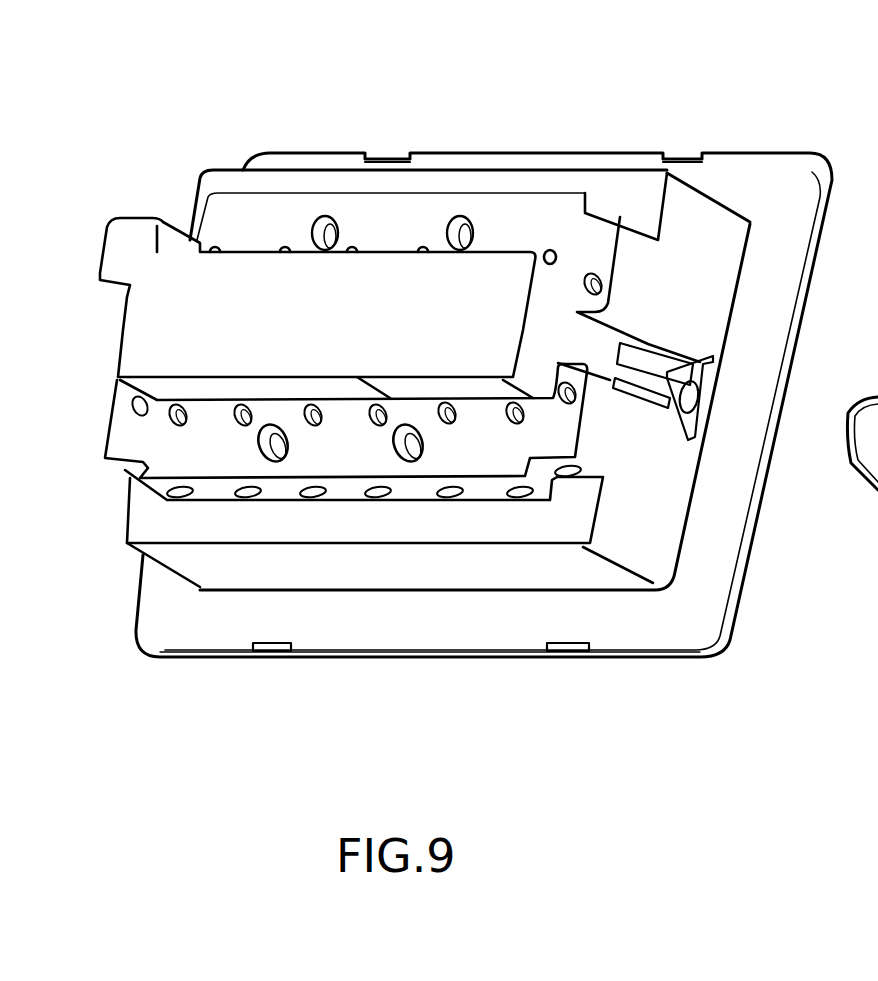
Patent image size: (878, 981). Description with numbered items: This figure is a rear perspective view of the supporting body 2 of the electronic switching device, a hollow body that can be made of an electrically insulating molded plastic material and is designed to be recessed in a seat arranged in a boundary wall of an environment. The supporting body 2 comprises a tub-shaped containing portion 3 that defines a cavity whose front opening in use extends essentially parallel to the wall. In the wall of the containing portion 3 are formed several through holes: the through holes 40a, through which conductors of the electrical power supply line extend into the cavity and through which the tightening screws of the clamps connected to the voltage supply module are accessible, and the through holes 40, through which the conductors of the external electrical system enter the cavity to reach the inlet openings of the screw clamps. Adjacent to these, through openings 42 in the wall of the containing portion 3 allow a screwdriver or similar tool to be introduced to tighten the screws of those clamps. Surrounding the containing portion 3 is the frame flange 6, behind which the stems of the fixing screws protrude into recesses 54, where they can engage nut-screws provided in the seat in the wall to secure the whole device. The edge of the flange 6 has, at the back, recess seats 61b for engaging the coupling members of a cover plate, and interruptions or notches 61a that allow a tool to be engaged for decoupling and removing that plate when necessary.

The supporting body 2 is at (180, 188).
The containing portion 3 is at (523, 193).
The frame flange 6 is at (505, 160).
The through holes 40 is at (243, 426).
The through holes 40a is at (600, 286).
The through openings 42 is at (248, 500).
The recesses 54 is at (655, 377).
The notches 61a is at (427, 660).
The recess seats 61b is at (386, 158).